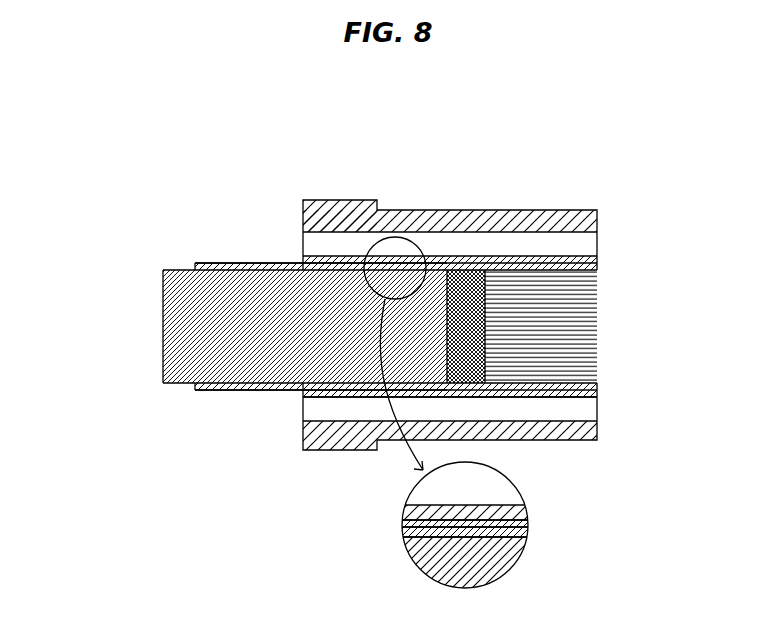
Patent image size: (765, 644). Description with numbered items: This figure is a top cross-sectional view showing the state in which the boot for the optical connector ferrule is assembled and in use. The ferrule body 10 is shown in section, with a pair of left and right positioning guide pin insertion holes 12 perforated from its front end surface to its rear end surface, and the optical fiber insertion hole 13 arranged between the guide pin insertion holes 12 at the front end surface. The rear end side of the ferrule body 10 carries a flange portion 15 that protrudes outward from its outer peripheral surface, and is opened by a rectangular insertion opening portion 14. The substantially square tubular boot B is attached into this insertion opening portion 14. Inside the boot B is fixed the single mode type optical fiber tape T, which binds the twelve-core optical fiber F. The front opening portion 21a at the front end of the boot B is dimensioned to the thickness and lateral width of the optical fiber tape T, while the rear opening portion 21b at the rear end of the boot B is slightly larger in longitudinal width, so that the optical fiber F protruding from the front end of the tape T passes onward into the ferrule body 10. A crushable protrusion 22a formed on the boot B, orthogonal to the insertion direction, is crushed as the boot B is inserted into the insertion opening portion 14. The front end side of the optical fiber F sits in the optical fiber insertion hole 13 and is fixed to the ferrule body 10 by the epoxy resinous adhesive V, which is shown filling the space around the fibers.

The ferrule body 10 is at (486, 198).
The flange portion 15 is at (345, 200).
The positioning guide pin insertion holes 12 is at (330, 232).
The optical fiber insertion hole 13 is at (565, 262).
The boot B is at (215, 265).
The rear opening portion 21b is at (195, 266).
The single mode type optical fiber tape T is at (185, 348).
The insertion opening portion 14 is at (300, 382).
The optical fiber F is at (597, 275).
The front opening portion 21a is at (485, 380).
The protrusion 22a is at (450, 512).
The epoxy resinous adhesive V is at (512, 530).